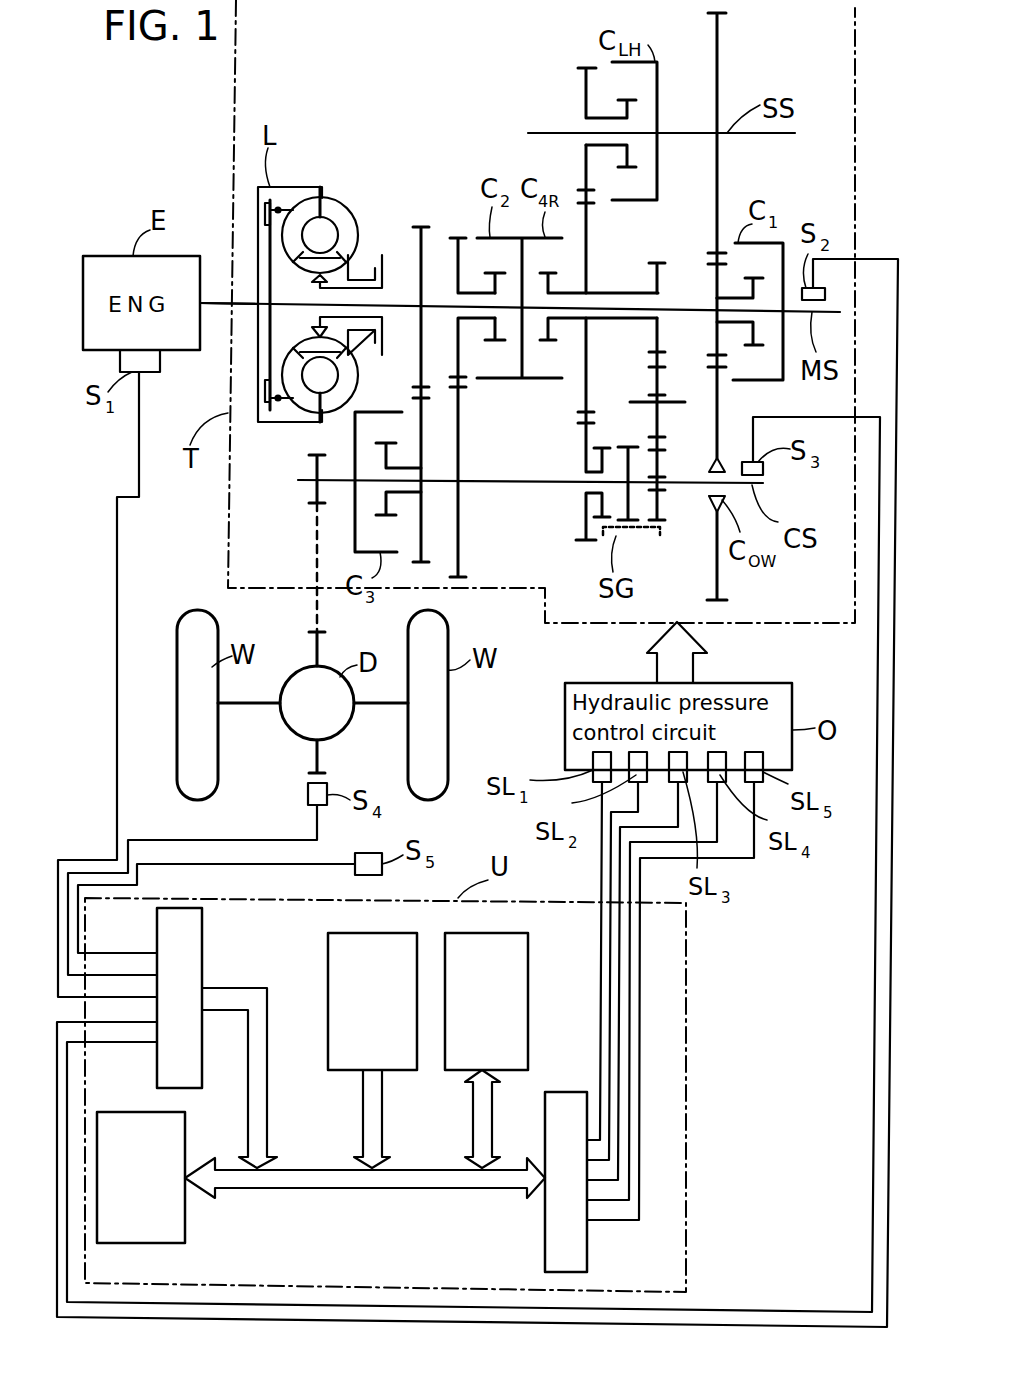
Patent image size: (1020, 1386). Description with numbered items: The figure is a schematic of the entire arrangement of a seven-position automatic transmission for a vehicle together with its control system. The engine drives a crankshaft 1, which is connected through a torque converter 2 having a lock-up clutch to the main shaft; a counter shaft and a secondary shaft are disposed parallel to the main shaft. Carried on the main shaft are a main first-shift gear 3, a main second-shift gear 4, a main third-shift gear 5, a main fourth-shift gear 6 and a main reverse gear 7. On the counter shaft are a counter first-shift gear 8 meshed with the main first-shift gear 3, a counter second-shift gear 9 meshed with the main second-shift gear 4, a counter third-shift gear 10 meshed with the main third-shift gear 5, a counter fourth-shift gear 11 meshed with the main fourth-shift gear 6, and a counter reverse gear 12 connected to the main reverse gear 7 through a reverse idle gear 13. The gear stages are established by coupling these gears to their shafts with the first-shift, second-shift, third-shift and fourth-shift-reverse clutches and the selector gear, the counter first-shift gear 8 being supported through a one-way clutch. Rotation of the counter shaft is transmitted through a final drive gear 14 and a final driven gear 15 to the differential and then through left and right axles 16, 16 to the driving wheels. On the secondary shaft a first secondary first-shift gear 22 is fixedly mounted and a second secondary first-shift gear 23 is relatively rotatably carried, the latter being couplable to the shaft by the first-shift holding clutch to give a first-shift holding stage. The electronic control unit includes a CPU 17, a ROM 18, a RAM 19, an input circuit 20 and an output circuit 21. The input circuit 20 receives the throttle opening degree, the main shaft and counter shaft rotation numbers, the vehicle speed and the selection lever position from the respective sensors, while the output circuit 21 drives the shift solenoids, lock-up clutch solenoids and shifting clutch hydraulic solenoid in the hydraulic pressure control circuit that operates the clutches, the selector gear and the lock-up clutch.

The crankshaft 1 is at (222, 300).
The torque converter 2 is at (336, 176).
The main first-shift gear 3 is at (714, 258).
The main second-shift gear 4 is at (456, 237).
The main third-shift gear 5 is at (418, 226).
The main fourth-shift gear 6 is at (590, 200).
The main reverse gear 7 is at (657, 262).
The counter first-shift gear 8 is at (727, 601).
The counter second-shift gear 9 is at (462, 576).
The counter third-shift gear 10 is at (412, 562).
The counter fourth-shift gear 11 is at (582, 542).
The counter reverse gear 12 is at (648, 522).
The reverse idle gear 13 is at (658, 363).
The final drive gear 14 is at (313, 505).
The final driven gear 15 is at (312, 632).
The axles 16 is at (250, 705).
The CPU 17 is at (185, 1138).
The ROM 18 is at (328, 962).
The RAM 19 is at (528, 938).
The input circuit 20 is at (204, 952).
The output circuit 21 is at (545, 1248).
The first secondary first-shift gear 22 is at (722, 14).
The second secondary first-shift gear 23 is at (586, 68).